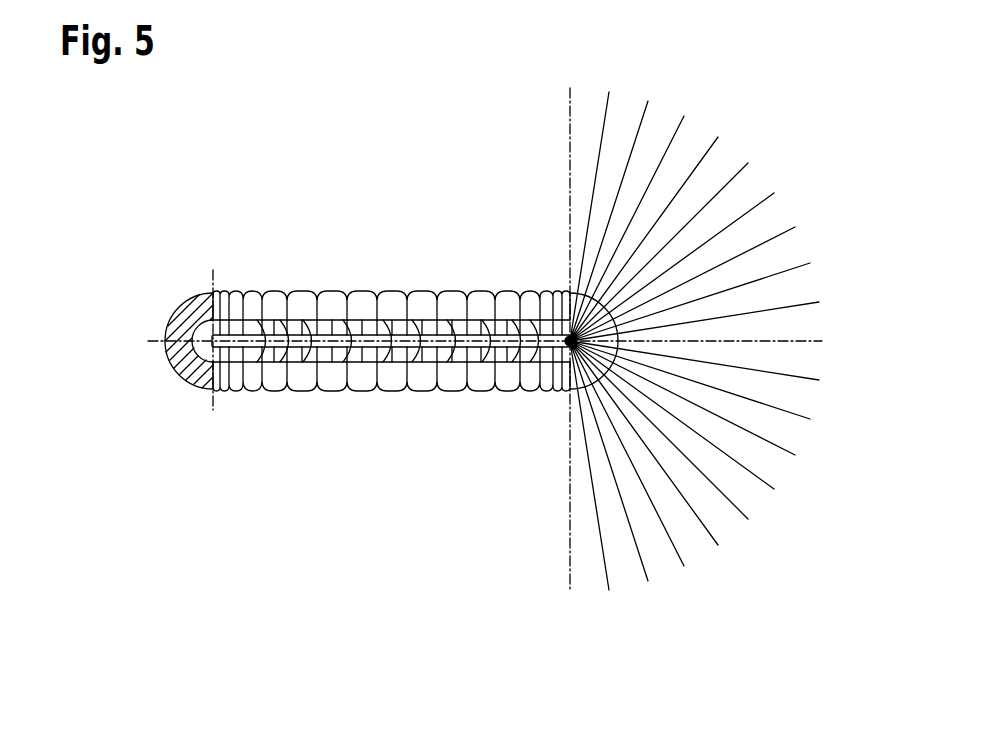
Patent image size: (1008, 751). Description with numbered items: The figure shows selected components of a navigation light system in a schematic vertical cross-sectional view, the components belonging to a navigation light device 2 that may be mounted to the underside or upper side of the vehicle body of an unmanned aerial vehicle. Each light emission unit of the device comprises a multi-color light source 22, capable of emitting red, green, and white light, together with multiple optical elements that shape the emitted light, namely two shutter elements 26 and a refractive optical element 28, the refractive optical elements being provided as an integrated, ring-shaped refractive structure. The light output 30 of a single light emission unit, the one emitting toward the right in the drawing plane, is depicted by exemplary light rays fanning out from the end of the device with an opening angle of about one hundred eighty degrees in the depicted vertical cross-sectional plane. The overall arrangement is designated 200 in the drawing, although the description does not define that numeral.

The navigation light device 2 is at (388, 404).
The multi-color light source 22 is at (188, 323).
The shutter element 26 is at (386, 323).
The refractive optical element 28 is at (330, 292).
The light output 30 is at (797, 289).
The instrument arrangement 200 is at (140, 453).